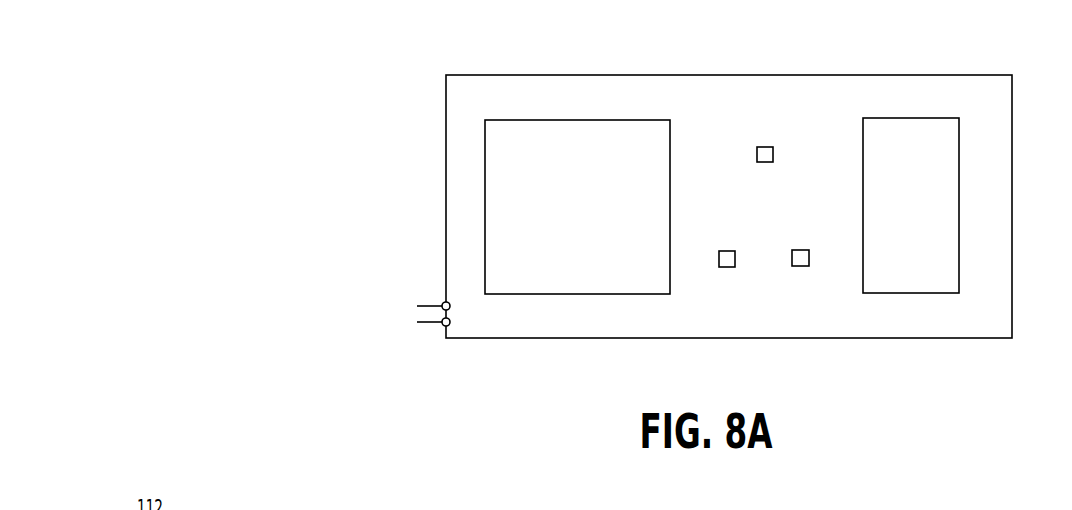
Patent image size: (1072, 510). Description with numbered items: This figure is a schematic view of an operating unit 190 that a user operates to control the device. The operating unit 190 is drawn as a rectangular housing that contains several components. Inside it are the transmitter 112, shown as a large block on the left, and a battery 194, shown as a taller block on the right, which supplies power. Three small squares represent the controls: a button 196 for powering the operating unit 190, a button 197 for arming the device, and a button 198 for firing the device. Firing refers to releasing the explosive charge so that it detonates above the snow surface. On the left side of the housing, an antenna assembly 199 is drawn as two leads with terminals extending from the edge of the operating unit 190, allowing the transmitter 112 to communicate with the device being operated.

The operating unit 190 is at (313, 72).
The transmitter 112 is at (525, 119).
The battery 194 is at (930, 118).
The button 196 is at (763, 147).
The button 197 is at (721, 267).
The button 198 is at (803, 266).
The antenna assembly 199 is at (418, 290).